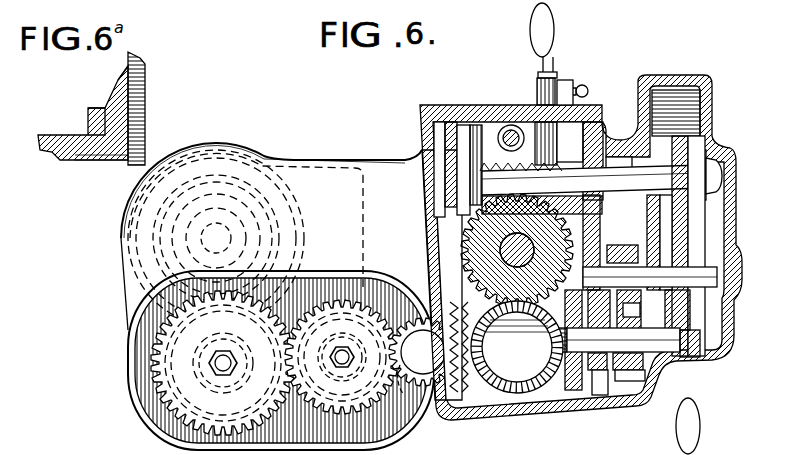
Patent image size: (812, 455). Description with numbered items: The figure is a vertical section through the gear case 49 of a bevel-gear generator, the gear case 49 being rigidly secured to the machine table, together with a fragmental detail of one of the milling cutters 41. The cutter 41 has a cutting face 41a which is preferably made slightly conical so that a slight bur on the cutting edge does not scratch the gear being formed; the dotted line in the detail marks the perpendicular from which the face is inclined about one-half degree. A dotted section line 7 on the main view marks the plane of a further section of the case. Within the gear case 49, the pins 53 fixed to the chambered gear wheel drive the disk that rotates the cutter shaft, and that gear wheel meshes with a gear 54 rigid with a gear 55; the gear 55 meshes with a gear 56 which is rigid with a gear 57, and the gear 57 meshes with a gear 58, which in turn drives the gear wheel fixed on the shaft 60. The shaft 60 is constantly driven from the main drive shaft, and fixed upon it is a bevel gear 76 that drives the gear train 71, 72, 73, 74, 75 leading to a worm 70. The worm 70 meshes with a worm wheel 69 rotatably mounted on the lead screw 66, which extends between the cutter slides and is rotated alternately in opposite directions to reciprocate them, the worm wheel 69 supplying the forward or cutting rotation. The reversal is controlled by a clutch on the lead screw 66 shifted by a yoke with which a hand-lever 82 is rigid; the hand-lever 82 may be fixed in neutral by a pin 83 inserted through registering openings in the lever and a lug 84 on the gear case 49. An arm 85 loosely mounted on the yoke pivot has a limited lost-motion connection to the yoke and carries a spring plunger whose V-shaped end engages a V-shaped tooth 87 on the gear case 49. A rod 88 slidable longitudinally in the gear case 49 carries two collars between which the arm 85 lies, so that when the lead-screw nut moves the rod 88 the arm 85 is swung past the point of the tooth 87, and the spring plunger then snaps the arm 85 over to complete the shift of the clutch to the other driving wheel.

In FIG. 6, the section line 7 is at (213, 140).
In FIG. 6A, the milling cutter 41 is at (104, 108).
In FIG. 6A, the cutting face 41a is at (118, 66).
In FIG. 6, the gear case 49 is at (123, 290).
In FIG. 6, the pin 53 is at (283, 210).
In FIG. 6, the gear 54 is at (132, 407).
In FIG. 6, the gear 55 is at (188, 398).
In FIG. 6, the gear 56 is at (340, 302).
In FIG. 6, the gear 57 is at (392, 322).
In FIG. 6, the gear 58 is at (400, 368).
In FIG. 6, the shaft 60 is at (522, 352).
In FIG. 6, the lead screw 66 is at (490, 292).
In FIG. 6, the worm wheel 69 is at (495, 130).
In FIG. 6, the worm 70 is at (538, 165).
In FIG. 6, the gear 71 is at (692, 130).
In FIG. 6, the gear 72 is at (692, 236).
In FIG. 6, the gear 73 is at (622, 245).
In FIG. 6, the gear 74 is at (630, 381).
In FIG. 6, the gear 75 is at (576, 392).
In FIG. 6, the bevel gear 76 is at (519, 395).
In FIG. 6, the hand-lever 82 is at (556, 50).
In FIG. 6, the pin 83 is at (588, 88).
In FIG. 6, the lug 84 is at (568, 80).
In FIG. 6, the arm 85 is at (470, 143).
In FIG. 6, the V-shaped tooth 87 is at (478, 140).
In FIG. 6, the rod 88 is at (506, 125).